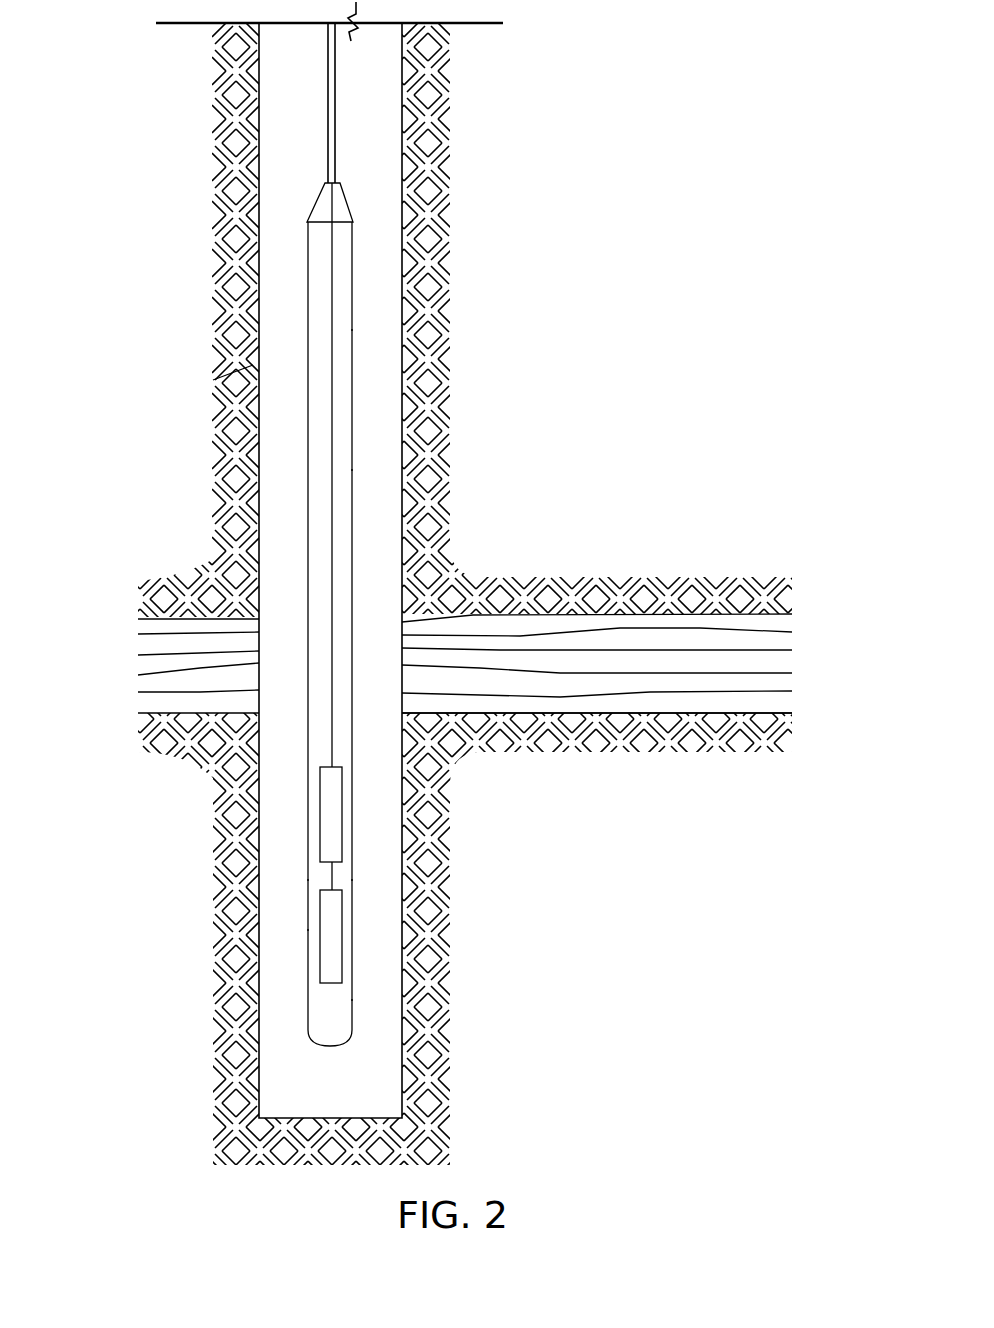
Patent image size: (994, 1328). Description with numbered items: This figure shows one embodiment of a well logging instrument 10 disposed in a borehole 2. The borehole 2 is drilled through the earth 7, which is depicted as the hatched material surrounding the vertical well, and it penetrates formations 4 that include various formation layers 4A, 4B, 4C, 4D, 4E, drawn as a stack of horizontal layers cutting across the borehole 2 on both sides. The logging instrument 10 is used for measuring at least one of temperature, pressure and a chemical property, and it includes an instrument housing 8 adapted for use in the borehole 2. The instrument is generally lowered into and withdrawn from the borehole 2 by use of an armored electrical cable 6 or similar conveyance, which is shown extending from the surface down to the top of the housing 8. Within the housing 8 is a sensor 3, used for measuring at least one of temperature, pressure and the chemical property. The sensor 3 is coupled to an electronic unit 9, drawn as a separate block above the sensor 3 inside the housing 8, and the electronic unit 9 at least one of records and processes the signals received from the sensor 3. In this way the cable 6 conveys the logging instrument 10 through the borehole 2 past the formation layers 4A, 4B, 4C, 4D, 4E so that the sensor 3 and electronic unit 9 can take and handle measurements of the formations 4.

The borehole 2 is at (380, 97).
The sensor 3 is at (320, 908).
The formations 4 is at (138, 670).
The formation layer 4A is at (792, 618).
The formation layer 4B is at (792, 640).
The formation layer 4C is at (792, 658).
The formation layer 4D is at (792, 678).
The formation layer 4E is at (792, 703).
The armored electrical cable 6 is at (327, 108).
The earth 7 is at (430, 952).
The instrument housing 8 is at (308, 572).
The electronic unit 9 is at (320, 783).
The well logging instrument 10 is at (365, 298).